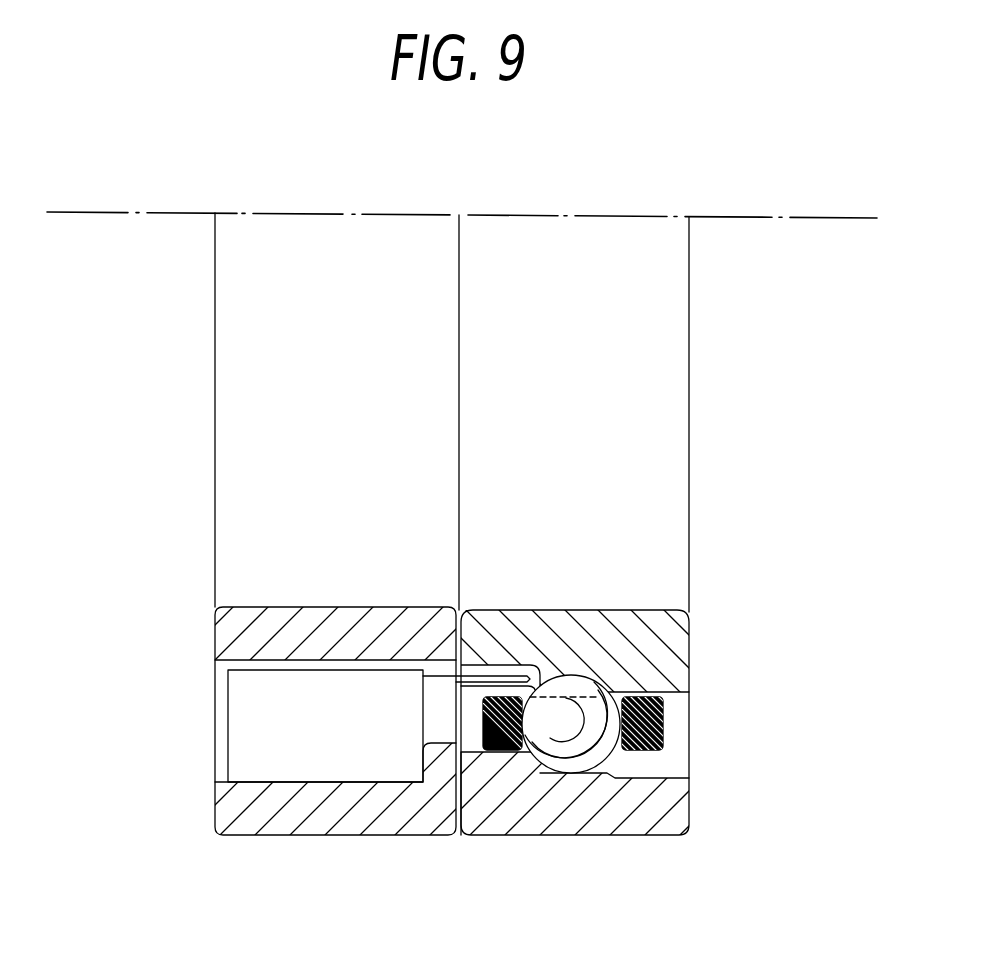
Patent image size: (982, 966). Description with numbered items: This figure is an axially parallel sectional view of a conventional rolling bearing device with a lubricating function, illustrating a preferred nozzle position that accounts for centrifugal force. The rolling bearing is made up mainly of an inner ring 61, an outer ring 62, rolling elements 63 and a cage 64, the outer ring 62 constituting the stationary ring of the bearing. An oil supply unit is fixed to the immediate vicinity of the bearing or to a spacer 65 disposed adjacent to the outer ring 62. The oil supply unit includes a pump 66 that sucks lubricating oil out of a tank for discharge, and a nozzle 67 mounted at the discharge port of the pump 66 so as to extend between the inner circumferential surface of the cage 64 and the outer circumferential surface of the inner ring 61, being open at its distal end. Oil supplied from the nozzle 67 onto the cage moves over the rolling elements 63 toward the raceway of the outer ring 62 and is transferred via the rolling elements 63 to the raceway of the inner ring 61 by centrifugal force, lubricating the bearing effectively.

The inner ring 61 is at (653, 670).
The outer ring 62 is at (575, 835).
The rolling elements 63 is at (560, 747).
The cage 64 is at (660, 725).
The spacer 65 is at (310, 820).
The pump 66 is at (258, 720).
The nozzle 67 is at (472, 677).